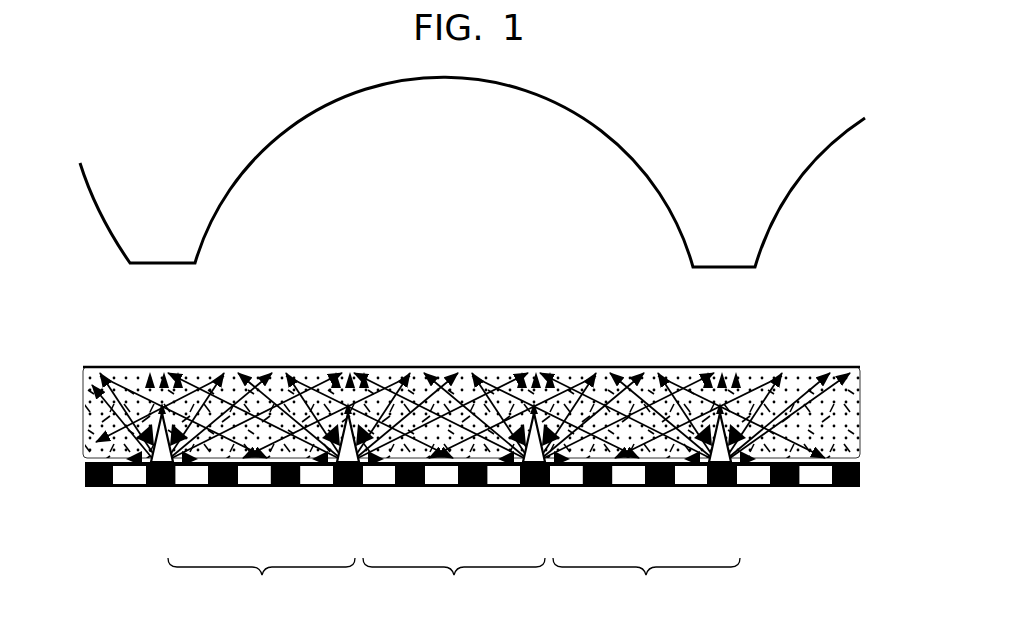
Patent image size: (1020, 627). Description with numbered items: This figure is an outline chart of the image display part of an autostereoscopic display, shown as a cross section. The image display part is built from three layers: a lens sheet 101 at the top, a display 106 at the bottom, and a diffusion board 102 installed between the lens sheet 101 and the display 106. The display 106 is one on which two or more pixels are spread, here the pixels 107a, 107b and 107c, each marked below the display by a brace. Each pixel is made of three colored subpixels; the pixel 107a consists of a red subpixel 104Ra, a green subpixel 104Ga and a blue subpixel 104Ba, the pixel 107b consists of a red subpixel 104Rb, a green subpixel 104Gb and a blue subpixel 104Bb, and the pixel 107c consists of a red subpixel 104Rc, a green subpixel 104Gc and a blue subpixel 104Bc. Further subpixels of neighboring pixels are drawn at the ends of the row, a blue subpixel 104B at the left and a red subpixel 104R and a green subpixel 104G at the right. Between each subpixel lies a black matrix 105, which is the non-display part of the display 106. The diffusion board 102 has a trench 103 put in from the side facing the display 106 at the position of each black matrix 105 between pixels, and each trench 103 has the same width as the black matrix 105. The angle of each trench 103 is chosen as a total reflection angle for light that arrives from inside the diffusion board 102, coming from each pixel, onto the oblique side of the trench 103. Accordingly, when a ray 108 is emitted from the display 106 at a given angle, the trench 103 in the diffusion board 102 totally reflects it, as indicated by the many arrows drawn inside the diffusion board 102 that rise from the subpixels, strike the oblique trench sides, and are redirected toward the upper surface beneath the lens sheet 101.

The lens sheet 101 is at (84, 168).
The diffusion board 102 is at (82, 365).
The trench 103 is at (162, 412).
The blue subpixel 104B is at (142, 490).
The red subpixel 104Ra is at (208, 490).
The green subpixel 104Ga is at (274, 490).
The blue subpixel 104Ba is at (334, 490).
The red subpixel 104Rb is at (401, 490).
The green subpixel 104Gb is at (464, 490).
The blue subpixel 104Bb is at (527, 490).
The red subpixel 104Rc is at (588, 490).
The green subpixel 104Gc is at (651, 490).
The blue subpixel 104Bc is at (718, 490).
The red subpixel 104R is at (774, 490).
The green subpixel 104G is at (836, 490).
The black matrix 105 is at (98, 488).
The display 106 is at (82, 463).
The pixel 107a is at (261, 579).
The pixel 107b is at (454, 579).
The pixel 107c is at (646, 579).
The ray 108 is at (433, 368).